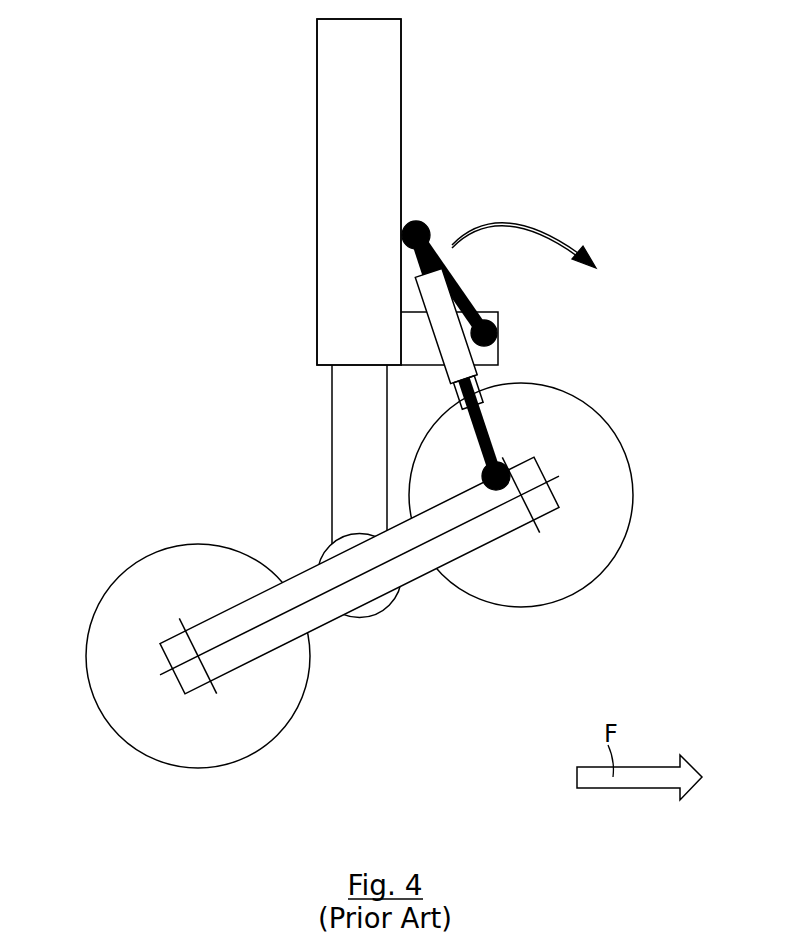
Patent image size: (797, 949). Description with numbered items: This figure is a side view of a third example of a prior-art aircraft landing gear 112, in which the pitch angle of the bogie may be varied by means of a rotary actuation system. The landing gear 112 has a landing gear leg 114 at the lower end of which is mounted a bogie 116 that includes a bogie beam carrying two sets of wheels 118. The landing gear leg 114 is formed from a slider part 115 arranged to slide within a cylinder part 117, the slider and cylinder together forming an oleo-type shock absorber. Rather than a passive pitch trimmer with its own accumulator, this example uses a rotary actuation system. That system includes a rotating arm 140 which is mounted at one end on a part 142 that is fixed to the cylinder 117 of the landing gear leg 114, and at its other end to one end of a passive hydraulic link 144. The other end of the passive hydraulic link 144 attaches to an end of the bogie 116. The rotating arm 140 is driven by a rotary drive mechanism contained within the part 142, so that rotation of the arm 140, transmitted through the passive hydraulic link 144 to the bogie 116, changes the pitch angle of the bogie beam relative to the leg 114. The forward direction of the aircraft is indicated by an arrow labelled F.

The landing gear 112 is at (376, 423).
The landing gear leg 114 is at (317, 273).
The slider part 115 is at (337, 400).
The bogie 116 is at (325, 612).
The cylinder part 117 is at (332, 185).
The wheels 118 is at (617, 528).
The rotating arm 140 is at (458, 278).
The part fixed to the cylinder 142 is at (483, 362).
The passive hydraulic link 144 is at (457, 363).